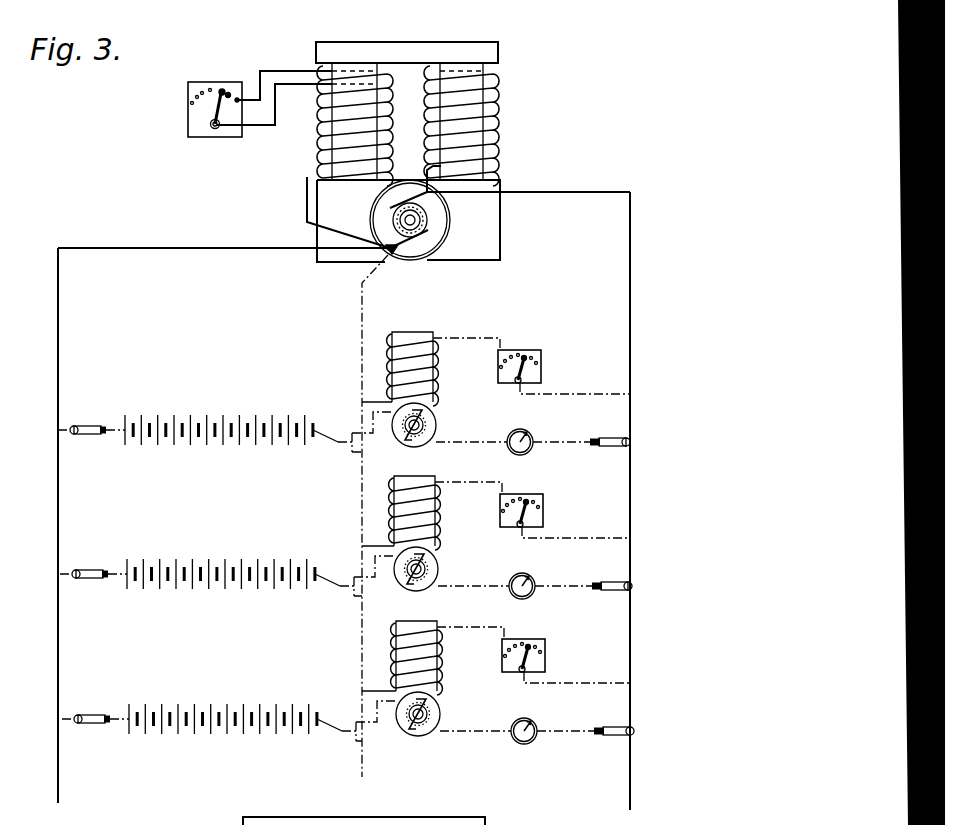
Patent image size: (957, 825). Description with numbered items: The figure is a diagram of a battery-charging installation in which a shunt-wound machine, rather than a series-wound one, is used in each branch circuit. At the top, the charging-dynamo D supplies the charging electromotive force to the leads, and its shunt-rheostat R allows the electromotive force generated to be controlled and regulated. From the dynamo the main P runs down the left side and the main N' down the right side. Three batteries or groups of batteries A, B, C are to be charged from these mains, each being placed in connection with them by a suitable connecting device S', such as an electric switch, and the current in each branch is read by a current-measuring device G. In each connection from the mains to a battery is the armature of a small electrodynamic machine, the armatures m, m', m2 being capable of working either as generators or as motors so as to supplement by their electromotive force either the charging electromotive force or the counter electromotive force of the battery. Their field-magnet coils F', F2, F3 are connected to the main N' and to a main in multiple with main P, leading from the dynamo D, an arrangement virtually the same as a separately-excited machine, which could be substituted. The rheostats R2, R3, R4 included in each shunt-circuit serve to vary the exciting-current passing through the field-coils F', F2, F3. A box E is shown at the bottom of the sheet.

The charging-dynamo D is at (488, 136).
The shunt-rheostat R is at (242, 104).
The main P is at (72, 525).
The main N' is at (647, 501).
The box / battery E is at (364, 821).
The current-measuring device G is at (522, 573).
The connecting device S' is at (93, 563).
The battery A is at (219, 419).
The battery B is at (221, 563).
The battery C is at (223, 707).
The field-magnet coil F' is at (409, 369).
The field-magnet coil F2 is at (412, 513).
The field-magnet coil F3 is at (413, 658).
The armature m is at (425, 425).
The armature m' is at (428, 569).
The armature m2 is at (432, 714).
The rheostat R2 is at (532, 365).
The rheostat R3 is at (534, 509).
The rheostat R4 is at (536, 654).